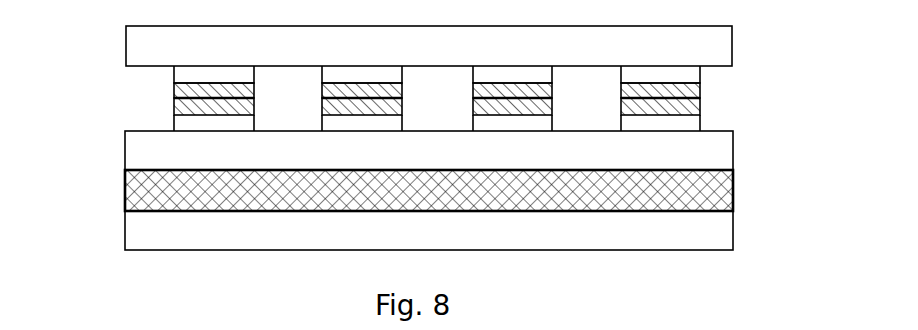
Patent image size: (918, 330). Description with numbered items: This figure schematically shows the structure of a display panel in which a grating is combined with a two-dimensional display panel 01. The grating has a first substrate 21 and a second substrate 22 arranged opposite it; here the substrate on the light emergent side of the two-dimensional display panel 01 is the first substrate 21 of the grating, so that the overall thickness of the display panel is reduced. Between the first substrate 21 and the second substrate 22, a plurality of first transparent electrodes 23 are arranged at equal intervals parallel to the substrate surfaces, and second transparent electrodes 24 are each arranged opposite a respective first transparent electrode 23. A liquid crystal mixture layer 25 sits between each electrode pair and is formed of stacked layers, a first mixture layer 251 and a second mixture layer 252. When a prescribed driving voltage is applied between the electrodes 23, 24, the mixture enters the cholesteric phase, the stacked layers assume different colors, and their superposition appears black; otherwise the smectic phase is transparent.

The second substrate 22 is at (710, 46).
The first substrate 21 is at (708, 146).
The 2D display panel 01 is at (117, 152).
The second transparent electrodes 24 is at (685, 75).
The first transparent electrodes 23 is at (688, 122).
The liquid crystal mixture layer 25 is at (355, 109).
The second mixture layer 252 is at (174, 89).
The first mixture layer 251 is at (174, 104).